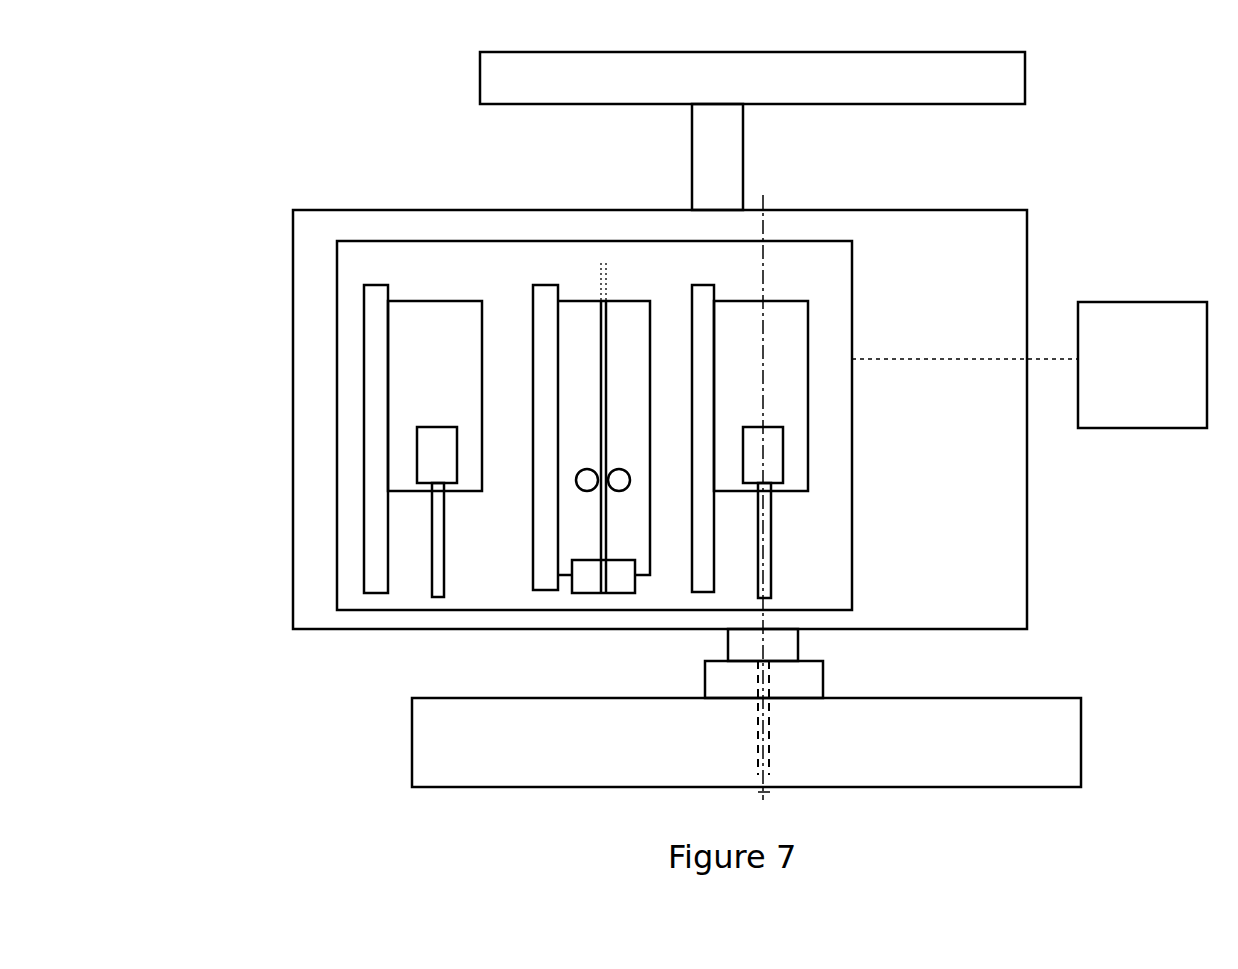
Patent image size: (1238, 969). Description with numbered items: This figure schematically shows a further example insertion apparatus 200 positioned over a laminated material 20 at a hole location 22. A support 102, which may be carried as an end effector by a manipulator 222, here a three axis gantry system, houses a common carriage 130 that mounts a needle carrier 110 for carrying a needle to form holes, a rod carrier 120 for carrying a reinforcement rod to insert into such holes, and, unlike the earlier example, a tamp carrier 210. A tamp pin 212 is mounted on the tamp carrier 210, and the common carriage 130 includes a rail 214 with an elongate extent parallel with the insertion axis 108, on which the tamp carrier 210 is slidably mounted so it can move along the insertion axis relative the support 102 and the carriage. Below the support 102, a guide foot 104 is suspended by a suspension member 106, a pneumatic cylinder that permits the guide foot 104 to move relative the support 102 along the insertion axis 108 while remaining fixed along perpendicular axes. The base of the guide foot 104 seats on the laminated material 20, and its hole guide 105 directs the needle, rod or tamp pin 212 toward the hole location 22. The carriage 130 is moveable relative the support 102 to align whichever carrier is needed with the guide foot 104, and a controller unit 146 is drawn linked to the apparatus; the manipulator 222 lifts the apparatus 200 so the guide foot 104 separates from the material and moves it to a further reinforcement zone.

The insertion apparatus 200 is at (228, 194).
The manipulator 222 is at (878, 90).
The support 102 is at (1027, 551).
The common carriage 130 is at (852, 538).
The rail 214 is at (373, 472).
The tamp carrier 210 is at (416, 300).
The tamp pin 212 is at (440, 557).
The rod carrier 120 is at (631, 300).
The needle carrier 110 is at (808, 345).
The controller 146 is at (1029, 365).
The suspension member 106 is at (728, 645).
The guide foot 104 is at (823, 680).
The laminated material 20 is at (1081, 752).
The hole guide 105 is at (757, 680).
The hole location 22 is at (771, 750).
The insertion axis 108 is at (766, 792).